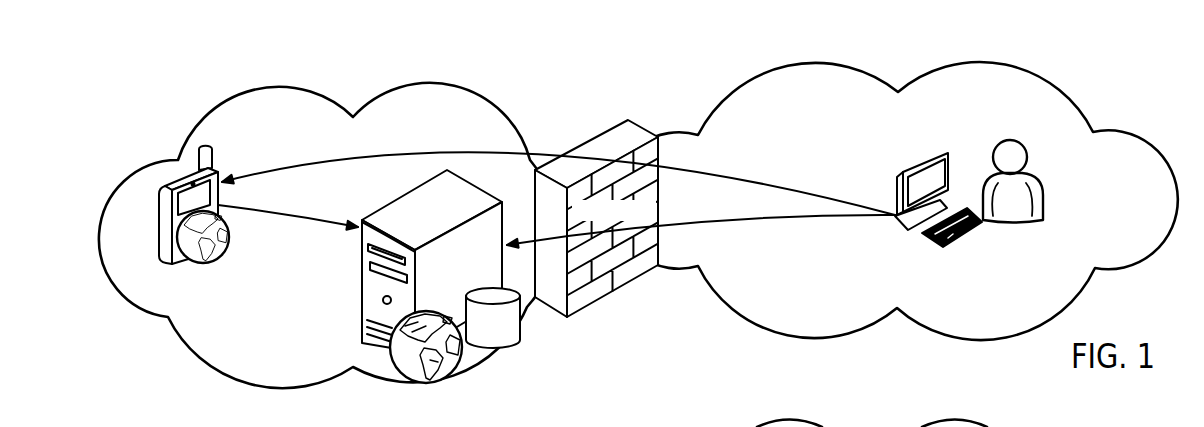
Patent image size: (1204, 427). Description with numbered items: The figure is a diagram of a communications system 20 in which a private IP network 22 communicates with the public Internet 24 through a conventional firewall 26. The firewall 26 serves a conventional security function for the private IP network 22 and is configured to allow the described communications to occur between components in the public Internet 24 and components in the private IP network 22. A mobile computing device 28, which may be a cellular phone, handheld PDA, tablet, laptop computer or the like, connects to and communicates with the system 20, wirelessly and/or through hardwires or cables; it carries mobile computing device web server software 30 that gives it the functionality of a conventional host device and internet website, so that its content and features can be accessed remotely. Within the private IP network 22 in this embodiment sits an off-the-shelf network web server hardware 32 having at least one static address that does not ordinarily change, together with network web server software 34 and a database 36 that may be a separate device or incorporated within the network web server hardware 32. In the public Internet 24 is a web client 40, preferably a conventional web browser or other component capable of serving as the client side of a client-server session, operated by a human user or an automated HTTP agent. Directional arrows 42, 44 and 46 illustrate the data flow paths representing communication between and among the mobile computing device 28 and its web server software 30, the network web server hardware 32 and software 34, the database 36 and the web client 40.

The communications system 20 is at (93, 78).
The private IP network 22 is at (278, 85).
The public Internet 24 is at (836, 63).
The firewall 26 is at (633, 118).
The mobile computing device 28 is at (163, 185).
The mobile computing device web server software 30 is at (185, 240).
The network web server hardware 32 is at (360, 328).
The network web server software 34 is at (429, 378).
The database 36 is at (490, 349).
The web client 40 is at (1000, 235).
The directional arrow 42 is at (290, 218).
The directional arrow 44 is at (758, 224).
The directional arrow 46 is at (758, 172).